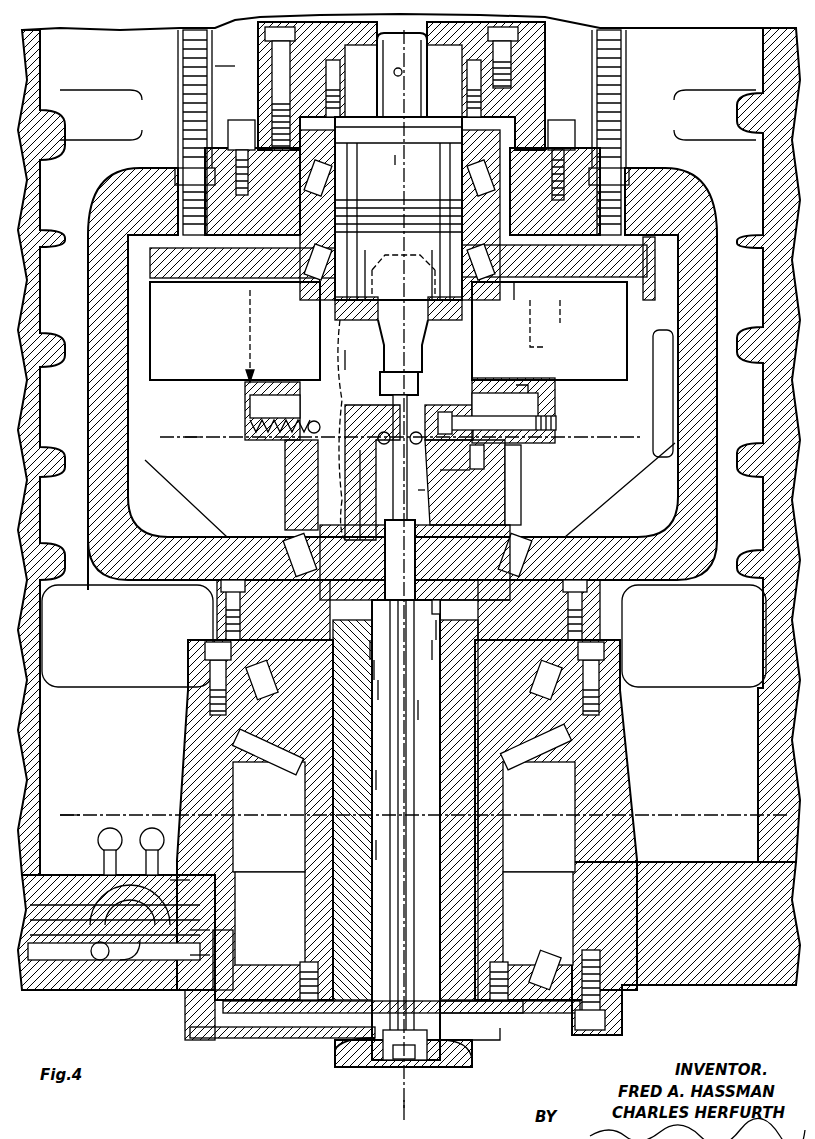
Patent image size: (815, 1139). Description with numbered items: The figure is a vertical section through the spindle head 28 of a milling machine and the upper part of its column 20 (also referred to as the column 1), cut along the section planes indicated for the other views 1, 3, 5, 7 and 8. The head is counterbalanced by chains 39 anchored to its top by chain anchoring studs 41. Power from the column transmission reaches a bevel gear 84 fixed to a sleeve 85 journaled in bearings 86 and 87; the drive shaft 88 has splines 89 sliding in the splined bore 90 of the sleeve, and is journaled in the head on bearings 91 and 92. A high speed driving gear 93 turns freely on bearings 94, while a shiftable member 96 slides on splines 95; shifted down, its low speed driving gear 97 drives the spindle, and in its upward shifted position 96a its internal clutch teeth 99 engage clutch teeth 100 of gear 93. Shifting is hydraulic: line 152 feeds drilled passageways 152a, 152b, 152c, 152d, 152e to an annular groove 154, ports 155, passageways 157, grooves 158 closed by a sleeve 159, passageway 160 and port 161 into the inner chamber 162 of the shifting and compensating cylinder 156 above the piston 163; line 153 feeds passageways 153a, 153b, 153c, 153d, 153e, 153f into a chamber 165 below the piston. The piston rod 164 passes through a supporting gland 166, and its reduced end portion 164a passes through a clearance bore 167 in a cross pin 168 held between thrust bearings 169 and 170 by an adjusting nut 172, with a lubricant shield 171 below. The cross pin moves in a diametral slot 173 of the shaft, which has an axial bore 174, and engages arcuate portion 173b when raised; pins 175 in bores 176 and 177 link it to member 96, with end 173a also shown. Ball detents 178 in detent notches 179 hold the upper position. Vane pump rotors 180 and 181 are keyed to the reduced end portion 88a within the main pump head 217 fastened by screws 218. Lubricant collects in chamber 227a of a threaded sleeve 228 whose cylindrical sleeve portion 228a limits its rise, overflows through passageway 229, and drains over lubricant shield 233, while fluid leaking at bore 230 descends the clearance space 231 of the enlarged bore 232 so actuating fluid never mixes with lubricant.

The column 20 is at (722, 972).
The spindle head 28 is at (652, 586).
The chains 39 is at (180, 68).
The chain anchoring studs 41 is at (183, 210).
The bevel gear 84 is at (540, 748).
The sleeve 85 is at (490, 823).
The bearing 86 is at (567, 990).
The bearing 87 is at (404, 679).
The drive shaft 88 is at (402, 384).
The reduced end portion 88a is at (398, 176).
The splines 89 is at (320, 884).
The splined bore 90 is at (325, 799).
The bearing 91 is at (500, 178).
The bearing 92 is at (520, 543).
The high speed driving gear 93 is at (590, 265).
The bearings 94 is at (503, 256).
The splines 95 is at (322, 358).
The shiftable member 96 is at (550, 385).
The upward shifted position 96a is at (556, 330).
The low speed driving gear 97 is at (521, 483).
The internal clutch teeth 99 is at (518, 386).
The clutch teeth 100 is at (516, 305).
The fluid conducting line 152 is at (111, 828).
The drilled passageway 152a is at (104, 887).
The drilled passageway 152b is at (98, 958).
The drilled passageway 152c is at (198, 958).
The drilled passageway 152d is at (192, 1005).
The drilled passageway 152e is at (274, 1040).
The fluid conducting line 153 is at (152, 828).
The passageway 153a is at (178, 888).
The passageway 153b is at (133, 962).
The passageway 153c is at (194, 931).
The passageway 153d is at (230, 915).
The passageway 153e is at (505, 1028).
The passageway 153f is at (482, 1055).
The annular groove 154 is at (322, 1040).
The ports 155 is at (372, 1068).
The shifting and compensating cylinder 156 is at (448, 982).
The passageways 157 is at (378, 955).
The grooves 158 is at (372, 852).
The sleeve 159 is at (372, 780).
The passageway 160 is at (437, 646).
The port 161 is at (437, 628).
The inner chamber 162 is at (418, 710).
The piston 163 is at (420, 1066).
The piston rod 164 is at (400, 755).
The reduced end portion 164a is at (428, 408).
The chamber 165 is at (470, 1066).
The supporting gland 166 is at (438, 606).
The clearance bore 167 is at (378, 437).
The cross pin 168 is at (352, 404).
The thrust bearing 169 is at (358, 358).
The thrust bearing 170 is at (360, 455).
The lubricant shield 171 is at (455, 480).
The adjusting nut 172 is at (406, 380).
The diametral slot 173 is at (472, 333).
The gear portion 173a is at (493, 462).
The arcuate portion 173b is at (361, 430).
The axial bore 174 is at (378, 312).
The pins 175 is at (529, 452).
The bores 176 is at (457, 449).
The bores 177 is at (505, 406).
The ball detents 178 is at (282, 456).
The detent notches 179 is at (250, 330).
The rotor 180 is at (347, 50).
The rotor 181 is at (446, 76).
The main pump head 217 is at (528, 96).
The screws 218 is at (282, 96).
The chamber 227a is at (470, 581).
The threaded sleeve 228 is at (380, 584).
The cylindrical sleeve portion 228a is at (421, 494).
The passageway 229 is at (455, 533).
The bore 230 is at (372, 651).
The clearance space 231 is at (372, 669).
The enlarged bore 232 is at (372, 687).
The lubricant shield 233 is at (575, 564).
The column 1 is at (380, 160).
The section arrow 3 is at (731, 838).
The section arrow 5 is at (612, 447).
The section arrow 7 is at (385, 1110).
The section arrow 8 is at (578, 40).